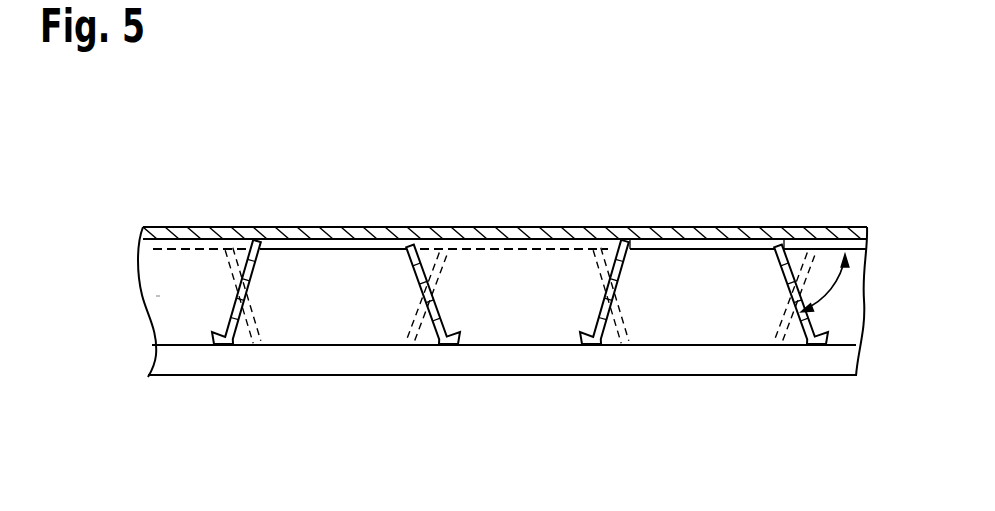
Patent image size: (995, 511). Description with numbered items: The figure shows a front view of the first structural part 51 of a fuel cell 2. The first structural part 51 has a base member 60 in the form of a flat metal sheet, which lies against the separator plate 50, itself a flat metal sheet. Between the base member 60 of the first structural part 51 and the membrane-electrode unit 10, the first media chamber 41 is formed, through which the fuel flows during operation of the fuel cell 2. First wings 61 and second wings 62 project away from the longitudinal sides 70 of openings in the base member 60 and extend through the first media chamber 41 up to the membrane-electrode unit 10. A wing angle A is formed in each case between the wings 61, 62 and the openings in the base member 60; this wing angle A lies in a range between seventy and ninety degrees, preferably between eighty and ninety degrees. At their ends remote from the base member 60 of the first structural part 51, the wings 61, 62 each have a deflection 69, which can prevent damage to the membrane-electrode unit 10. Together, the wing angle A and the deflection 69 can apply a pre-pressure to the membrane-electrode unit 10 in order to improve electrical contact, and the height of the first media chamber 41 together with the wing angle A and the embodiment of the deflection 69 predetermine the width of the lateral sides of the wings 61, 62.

The fuel cell 2 is at (96, 164).
The separator plate 50 is at (143, 230).
The first structural part 51 is at (340, 186).
The base member 60 is at (712, 238).
The first media chamber 41 is at (131, 319).
The membrane-electrode unit 10 is at (170, 355).
The longitudinal sides 70 is at (250, 240).
The first wings 61 is at (258, 282).
The second wings 62 is at (416, 281).
The deflection 69 is at (214, 345).
The wing angle A is at (826, 286).